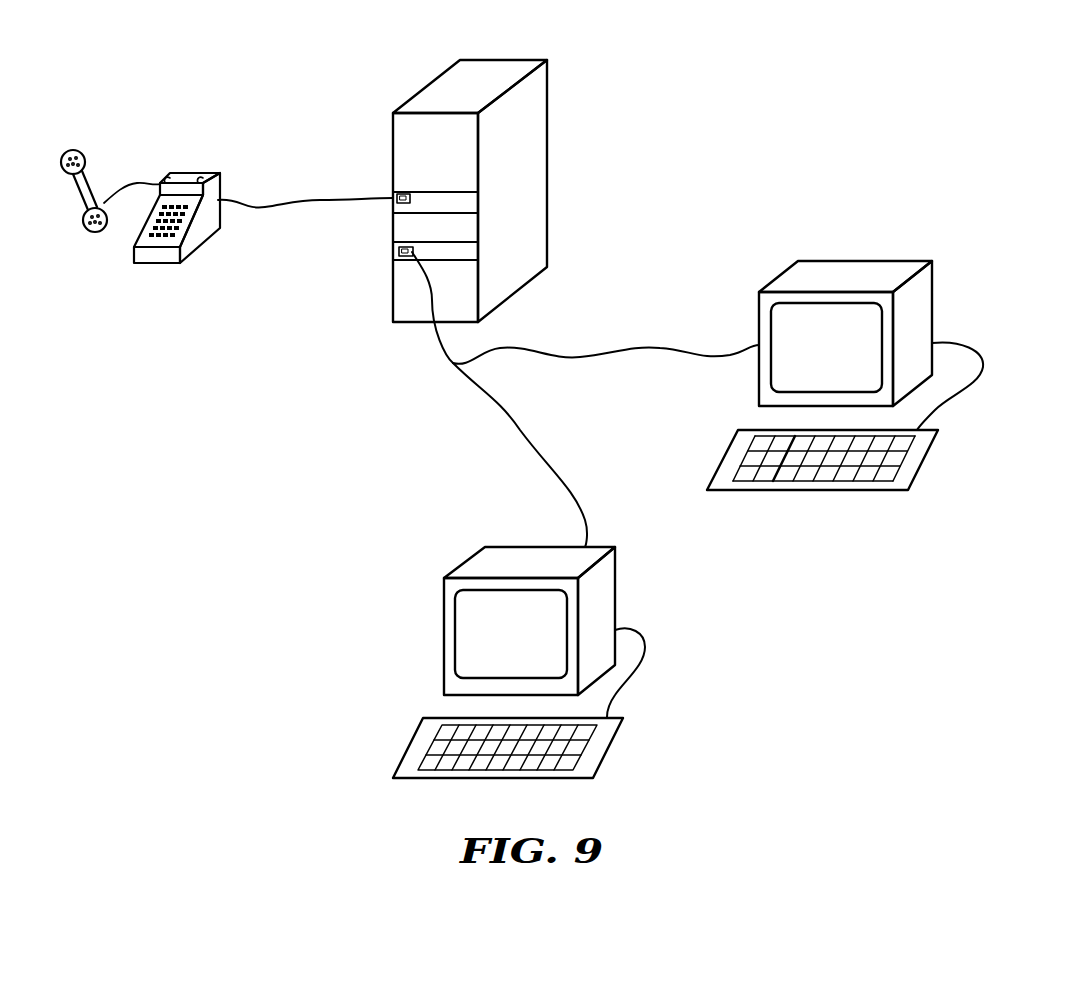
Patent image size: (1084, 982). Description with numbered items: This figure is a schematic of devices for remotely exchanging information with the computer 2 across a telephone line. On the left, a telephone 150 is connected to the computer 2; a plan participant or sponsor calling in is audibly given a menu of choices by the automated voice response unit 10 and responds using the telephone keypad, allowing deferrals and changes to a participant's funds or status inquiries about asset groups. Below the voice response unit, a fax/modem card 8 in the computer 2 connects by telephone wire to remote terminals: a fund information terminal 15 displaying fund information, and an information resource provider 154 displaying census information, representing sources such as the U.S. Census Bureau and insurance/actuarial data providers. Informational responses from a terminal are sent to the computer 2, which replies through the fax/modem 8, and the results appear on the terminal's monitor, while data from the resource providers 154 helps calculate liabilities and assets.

The computer 2 is at (492, 68).
The automated voice response unit 10 is at (472, 203).
The fax/modem card 8 is at (472, 250).
The telephone 150 is at (212, 163).
The fund information terminal 15 is at (857, 265).
The information resource providers 154 is at (607, 600).